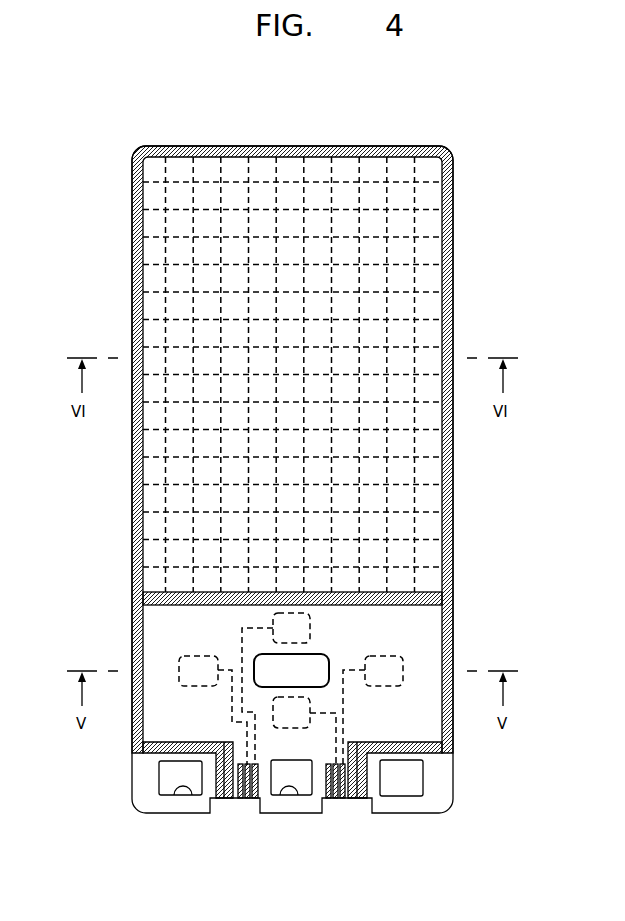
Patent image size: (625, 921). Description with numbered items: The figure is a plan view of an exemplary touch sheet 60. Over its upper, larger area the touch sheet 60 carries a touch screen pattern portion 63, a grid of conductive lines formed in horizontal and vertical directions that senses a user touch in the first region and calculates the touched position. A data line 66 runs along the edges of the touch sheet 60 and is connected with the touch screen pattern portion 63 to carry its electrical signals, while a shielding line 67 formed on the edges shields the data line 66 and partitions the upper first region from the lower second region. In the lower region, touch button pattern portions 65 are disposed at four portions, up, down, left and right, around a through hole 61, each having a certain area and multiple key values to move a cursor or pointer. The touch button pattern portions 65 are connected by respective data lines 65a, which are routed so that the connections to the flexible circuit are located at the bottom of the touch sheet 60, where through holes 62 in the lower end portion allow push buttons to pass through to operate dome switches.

The touch sheet 60 is at (108, 150).
The through hole 61 is at (323, 667).
The through holes 62 is at (283, 791).
The touch screen pattern portion 63 is at (177, 236).
The touch button pattern portion 65 is at (273, 615).
The data lines 65a is at (233, 700).
The data line 66 is at (138, 305).
The shielding line 67 is at (392, 598).